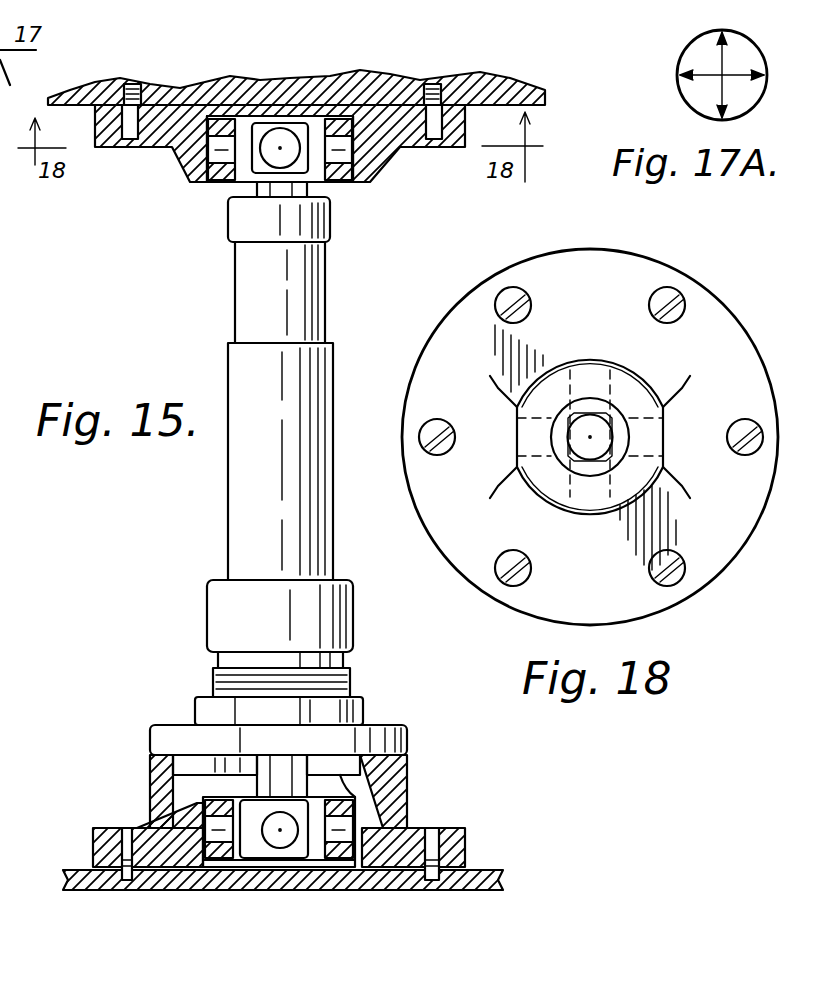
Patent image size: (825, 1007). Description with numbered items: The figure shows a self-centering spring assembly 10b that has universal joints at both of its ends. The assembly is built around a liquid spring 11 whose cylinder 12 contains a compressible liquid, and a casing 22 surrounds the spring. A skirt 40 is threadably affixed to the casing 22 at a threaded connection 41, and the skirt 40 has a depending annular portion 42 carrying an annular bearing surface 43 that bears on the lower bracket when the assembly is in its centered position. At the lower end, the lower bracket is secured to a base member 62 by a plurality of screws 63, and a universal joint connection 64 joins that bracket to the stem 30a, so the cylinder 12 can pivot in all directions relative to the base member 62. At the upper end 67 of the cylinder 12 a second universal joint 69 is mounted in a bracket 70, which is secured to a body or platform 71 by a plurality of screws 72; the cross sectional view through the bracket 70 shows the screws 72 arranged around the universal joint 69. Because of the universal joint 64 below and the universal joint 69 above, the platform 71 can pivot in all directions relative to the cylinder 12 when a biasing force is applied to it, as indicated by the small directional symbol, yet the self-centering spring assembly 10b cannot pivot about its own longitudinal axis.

In FIG. 15, the self-centering spring assembly 10b is at (170, 275).
In FIG. 15, the liquid spring 11 is at (318, 298).
In FIG. 15, the cylinder 12 is at (255, 292).
In FIG. 15, the casing 22 is at (243, 492).
In FIG. 15, the stem 30a is at (260, 753).
In FIG. 15, the skirt 40 is at (412, 730).
In FIG. 15, the threaded connection 41 is at (358, 712).
In FIG. 15, the depending annular portion 42 is at (405, 790).
In FIG. 15, the annular bearing surface 43 is at (148, 822).
In FIG. 15, the base member 62 is at (299, 841).
In FIG. 15, the screws 63 is at (128, 828).
In FIG. 15, the universal joint connection 64 is at (395, 763).
In FIG. 15, the upper end of cylinder 67 is at (335, 207).
In FIG. 15, the second universal joint 69 is at (245, 192).
In FIG. 18, the second universal joint 69 is at (609, 400).
In FIG. 15, the bracket 70 is at (386, 150).
In FIG. 18, the bracket 70 is at (760, 340).
In FIG. 15, the platform 71 is at (400, 42).
In FIG. 15, the screws 72 is at (436, 83).
In FIG. 18, the screws 72 is at (650, 305).